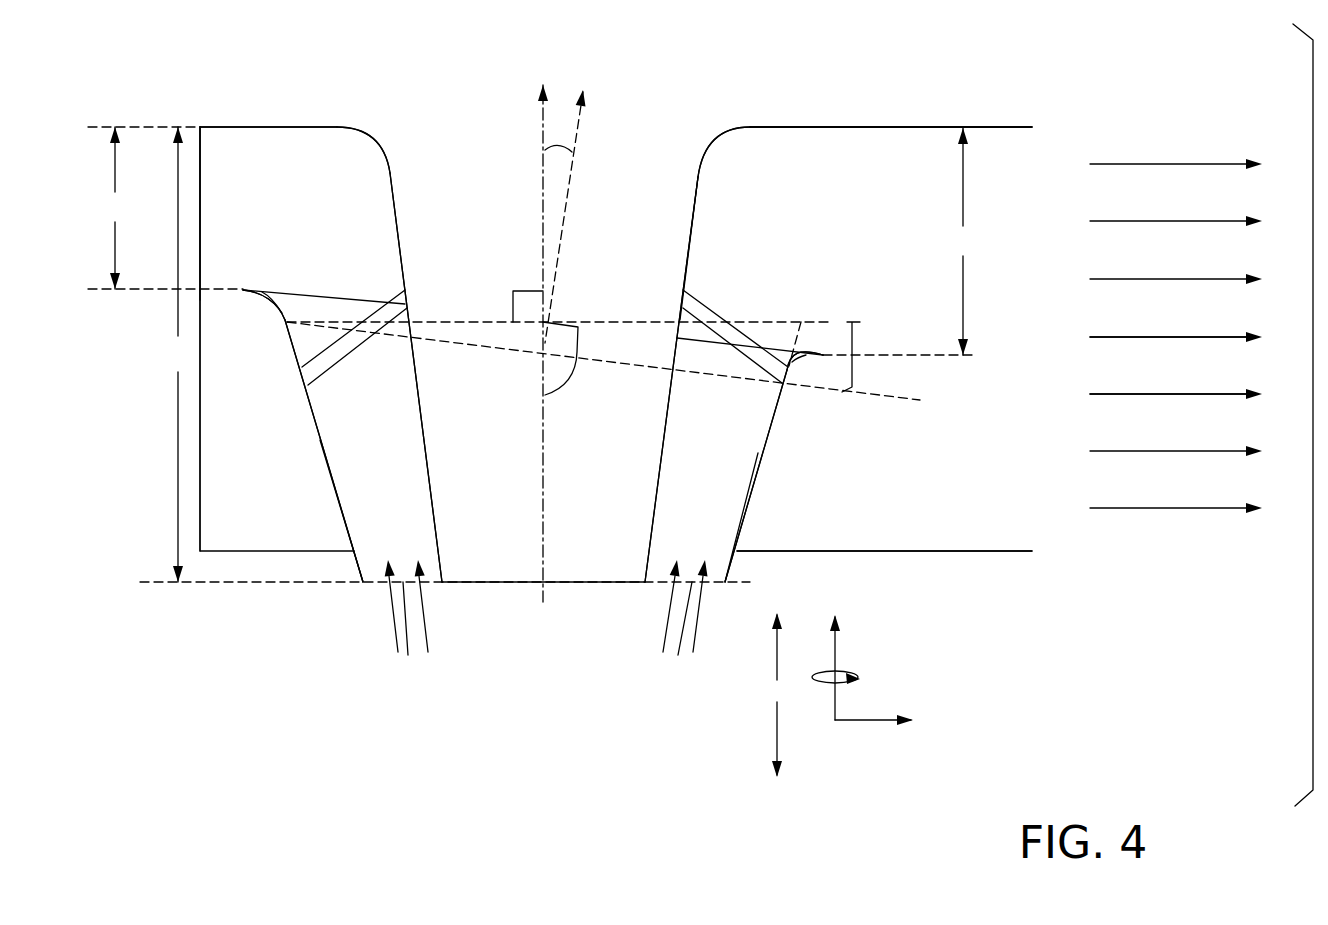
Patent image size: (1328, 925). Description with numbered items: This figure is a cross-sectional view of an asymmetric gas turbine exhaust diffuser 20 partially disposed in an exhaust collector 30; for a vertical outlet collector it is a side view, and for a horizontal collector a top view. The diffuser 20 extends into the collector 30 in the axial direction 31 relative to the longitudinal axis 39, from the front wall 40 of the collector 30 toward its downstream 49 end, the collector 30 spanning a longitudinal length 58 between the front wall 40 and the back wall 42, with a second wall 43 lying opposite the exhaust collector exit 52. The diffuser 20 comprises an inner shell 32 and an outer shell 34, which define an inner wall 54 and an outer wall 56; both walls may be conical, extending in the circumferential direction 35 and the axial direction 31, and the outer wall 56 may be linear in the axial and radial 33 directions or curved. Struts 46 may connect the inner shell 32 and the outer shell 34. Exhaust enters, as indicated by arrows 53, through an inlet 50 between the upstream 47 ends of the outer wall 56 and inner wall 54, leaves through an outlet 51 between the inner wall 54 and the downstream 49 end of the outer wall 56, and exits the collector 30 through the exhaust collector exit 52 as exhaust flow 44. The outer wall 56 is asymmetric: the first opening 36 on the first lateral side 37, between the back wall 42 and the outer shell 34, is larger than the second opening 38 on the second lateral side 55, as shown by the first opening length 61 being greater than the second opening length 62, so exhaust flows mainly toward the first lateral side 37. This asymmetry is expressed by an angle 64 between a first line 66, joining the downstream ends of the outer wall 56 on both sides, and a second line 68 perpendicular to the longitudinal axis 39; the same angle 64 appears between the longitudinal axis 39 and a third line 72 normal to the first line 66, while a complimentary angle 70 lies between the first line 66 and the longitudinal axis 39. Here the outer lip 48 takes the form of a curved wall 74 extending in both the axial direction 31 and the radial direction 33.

The gas turbine exhaust diffuser 20 is at (533, 656).
The exhaust collector 30 is at (937, 580).
The axial direction 31 is at (833, 655).
The inner shell 32 is at (380, 150).
The radial direction 33 is at (867, 720).
The outer shell 34 is at (318, 427).
The circumferential direction 35 is at (843, 670).
The first opening 36 is at (758, 283).
The first lateral side 37 is at (790, 203).
The second opening 38 is at (323, 230).
The longitudinal axis 39 is at (533, 117).
The front wall 40 is at (883, 551).
The back wall 42 is at (877, 127).
The second wall 43 is at (200, 487).
The exhaust flow 44 is at (1123, 338).
The struts 46 is at (343, 360).
The upstream end 47 is at (778, 733).
The outer lip 48 is at (268, 303).
The downstream end 49 is at (775, 653).
The inlet 50 is at (408, 655).
The outlet 51 is at (345, 298).
The exhaust collector exit 52 is at (1060, 315).
The arrows 53 is at (393, 613).
The inner wall 54 is at (428, 472).
The second lateral side 55 is at (307, 140).
The outer wall 56 is at (343, 508).
The longitudinal length 58 is at (178, 354).
The first opening length 61 is at (963, 241).
The second opening length 62 is at (115, 208).
The angle 64 is at (557, 183).
The first line 66 is at (877, 393).
The second line 68 is at (833, 322).
The complimentary angle 70 is at (582, 398).
The third line 72 is at (580, 118).
The curved wall 74 is at (282, 313).